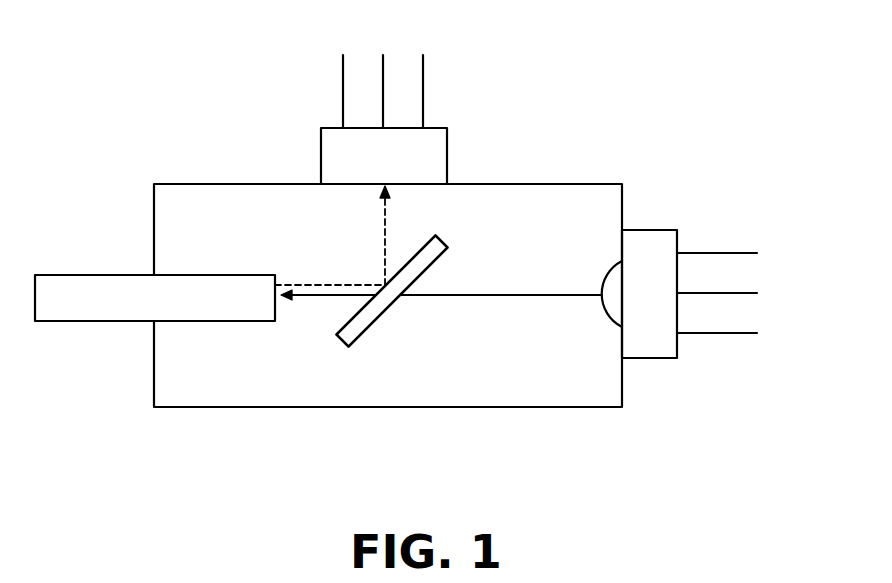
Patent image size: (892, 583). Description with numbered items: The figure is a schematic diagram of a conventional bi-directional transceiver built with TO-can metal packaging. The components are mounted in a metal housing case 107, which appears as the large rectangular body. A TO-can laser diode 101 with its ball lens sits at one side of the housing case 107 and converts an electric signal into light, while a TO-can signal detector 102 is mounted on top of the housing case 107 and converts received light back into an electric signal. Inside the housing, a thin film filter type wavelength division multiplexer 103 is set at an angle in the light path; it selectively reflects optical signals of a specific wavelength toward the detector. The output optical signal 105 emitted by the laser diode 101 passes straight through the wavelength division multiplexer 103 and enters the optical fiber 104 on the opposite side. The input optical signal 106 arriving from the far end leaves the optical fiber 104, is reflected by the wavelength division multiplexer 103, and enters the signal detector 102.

The TO-can laser diode 101 is at (690, 238).
The TO-can signal detector 102 is at (435, 107).
The thin film filter type wavelength division multiplexer 103 is at (370, 330).
The optical fiber 104 is at (83, 306).
The output optical signal 105 is at (497, 295).
The input optical signal 106 is at (322, 280).
The metal housing case 107 is at (570, 408).